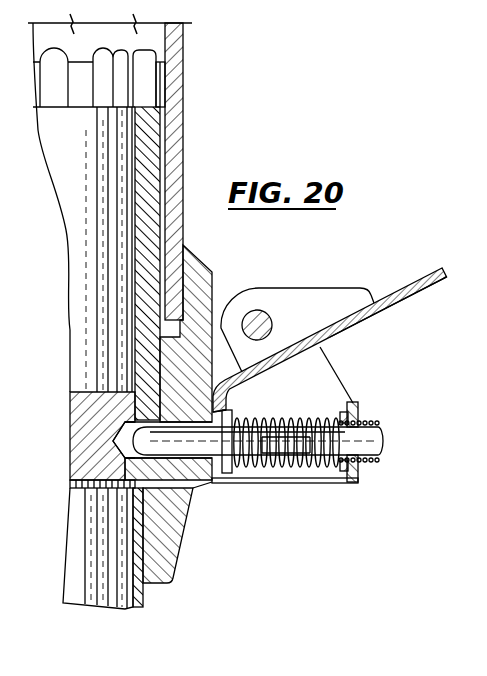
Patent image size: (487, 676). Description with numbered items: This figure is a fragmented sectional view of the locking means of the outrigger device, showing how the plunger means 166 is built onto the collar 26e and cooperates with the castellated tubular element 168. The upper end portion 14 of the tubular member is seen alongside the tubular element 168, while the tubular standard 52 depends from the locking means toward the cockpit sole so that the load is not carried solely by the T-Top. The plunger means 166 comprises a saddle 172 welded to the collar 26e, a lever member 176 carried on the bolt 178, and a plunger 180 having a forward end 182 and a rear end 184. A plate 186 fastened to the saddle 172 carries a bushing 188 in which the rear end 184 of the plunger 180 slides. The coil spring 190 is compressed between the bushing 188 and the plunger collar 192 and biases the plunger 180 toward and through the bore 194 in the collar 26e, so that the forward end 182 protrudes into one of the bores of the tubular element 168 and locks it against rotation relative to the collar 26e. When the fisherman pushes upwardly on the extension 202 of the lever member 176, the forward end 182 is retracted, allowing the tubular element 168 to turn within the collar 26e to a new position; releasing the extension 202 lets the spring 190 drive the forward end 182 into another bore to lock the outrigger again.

The upper end portion 14 is at (177, 95).
The castellated tubular element 168 is at (148, 135).
The saddle 172 is at (232, 282).
The plunger means 166 is at (307, 284).
The extension 202 is at (427, 270).
The bolt 178 is at (273, 326).
The lever member 176 is at (353, 324).
The plate 186 is at (357, 403).
The rear end 184 is at (286, 427).
The coil spring 190 is at (245, 420).
The bushing 188 is at (365, 464).
The bore 194 is at (193, 489).
The forward end 182 is at (196, 490).
The plunger collar 192 is at (226, 472).
The plunger 180 is at (303, 465).
The collar 26e is at (170, 538).
The tubular standard 52 is at (152, 600).